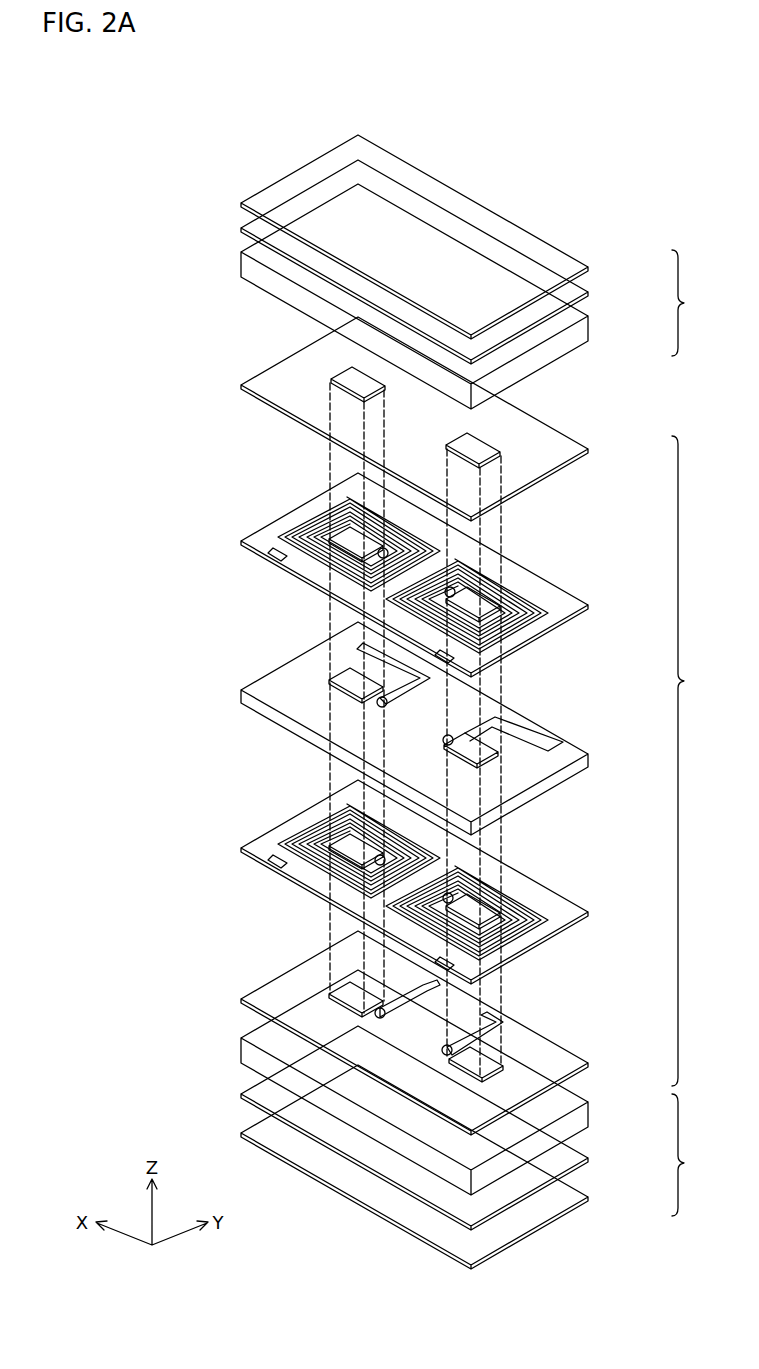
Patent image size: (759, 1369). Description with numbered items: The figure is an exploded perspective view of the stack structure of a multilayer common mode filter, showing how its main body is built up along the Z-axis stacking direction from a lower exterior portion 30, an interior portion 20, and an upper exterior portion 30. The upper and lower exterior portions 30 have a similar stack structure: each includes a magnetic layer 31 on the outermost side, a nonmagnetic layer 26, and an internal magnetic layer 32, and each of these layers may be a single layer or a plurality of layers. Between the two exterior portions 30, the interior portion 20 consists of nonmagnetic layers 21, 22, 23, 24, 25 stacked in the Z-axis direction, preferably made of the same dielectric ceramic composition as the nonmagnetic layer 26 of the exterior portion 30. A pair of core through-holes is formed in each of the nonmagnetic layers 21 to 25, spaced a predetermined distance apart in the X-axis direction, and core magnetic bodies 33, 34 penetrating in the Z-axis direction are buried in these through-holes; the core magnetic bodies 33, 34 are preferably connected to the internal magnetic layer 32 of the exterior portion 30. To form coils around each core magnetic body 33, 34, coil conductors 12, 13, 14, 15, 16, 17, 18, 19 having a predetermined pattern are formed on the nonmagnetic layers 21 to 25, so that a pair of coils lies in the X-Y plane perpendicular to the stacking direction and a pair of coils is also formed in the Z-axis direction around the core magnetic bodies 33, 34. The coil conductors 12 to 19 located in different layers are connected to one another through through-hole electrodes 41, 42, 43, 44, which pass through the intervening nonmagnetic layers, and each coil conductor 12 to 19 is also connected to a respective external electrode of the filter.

The coil conductor 12 is at (375, 672).
The coil conductor 13 is at (305, 525).
The coil conductor 14 is at (395, 1015).
The coil conductor 15 is at (300, 832).
The coil conductor 16 is at (500, 1043).
The coil conductor 17 is at (520, 898).
The coil conductor 18 is at (520, 732).
The coil conductor 19 is at (520, 590).
The interior portion 20 is at (694, 761).
The nonmagnetic layer 21 is at (596, 1062).
The nonmagnetic layer 22 is at (596, 912).
The nonmagnetic layer 23 is at (596, 755).
The nonmagnetic layer 24 is at (596, 604).
The nonmagnetic layer 25 is at (596, 446).
The nonmagnetic layer 26 is at (596, 292).
The exterior portion 30 is at (694, 733).
The magnetic layer 31 is at (596, 262).
The internal magnetic layer 32 is at (596, 320).
The core magnetic body 33 is at (343, 372).
The core magnetic body 34 is at (487, 450).
The through-hole electrode 41 is at (373, 963).
The through-hole electrode 42 is at (495, 1000).
The through-hole electrode 43 is at (343, 693).
The through-hole electrode 44 is at (440, 718).